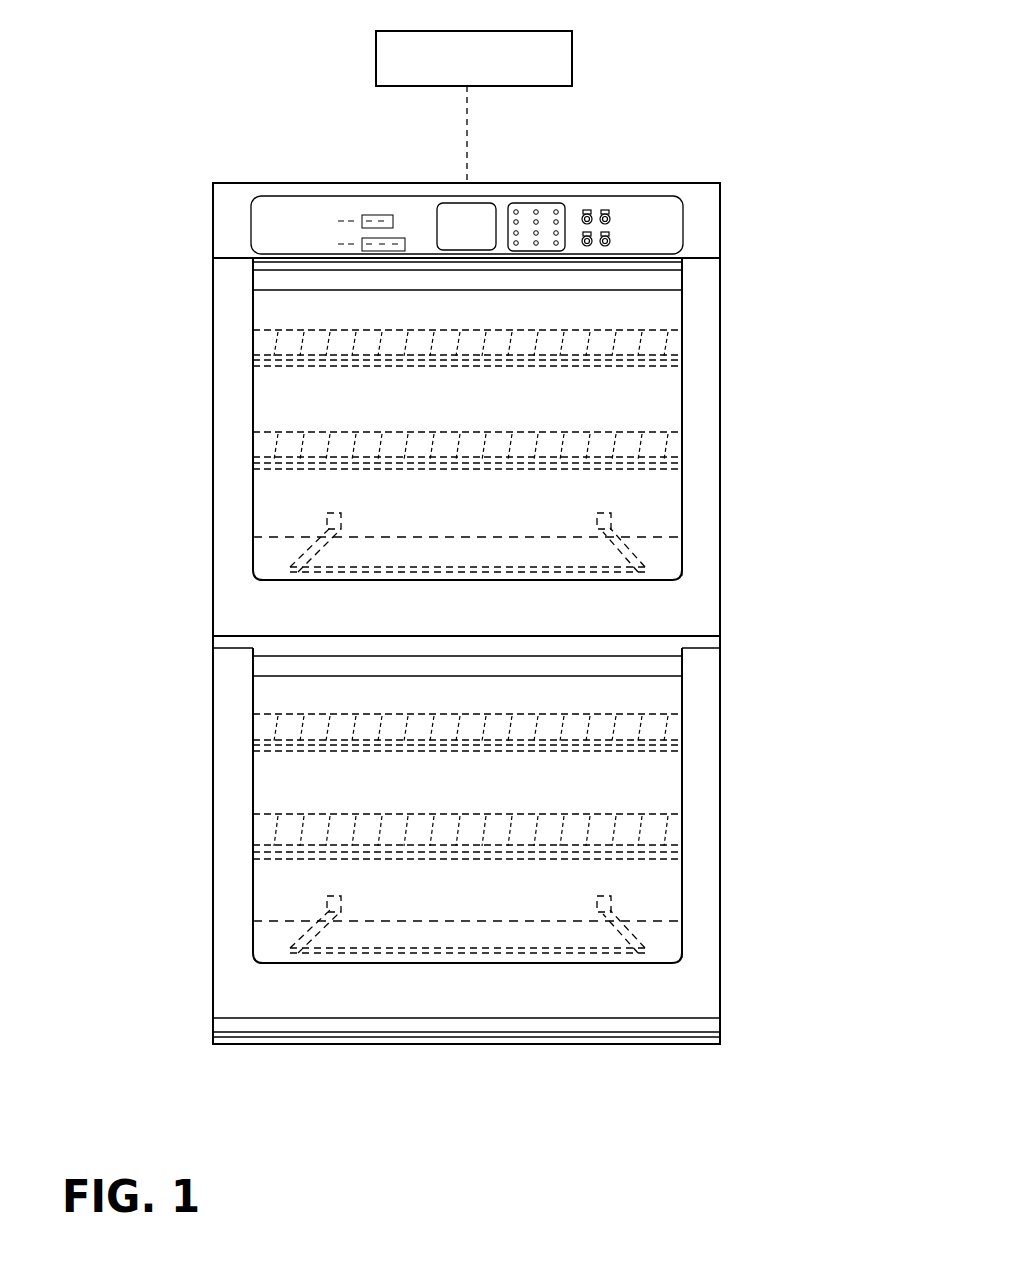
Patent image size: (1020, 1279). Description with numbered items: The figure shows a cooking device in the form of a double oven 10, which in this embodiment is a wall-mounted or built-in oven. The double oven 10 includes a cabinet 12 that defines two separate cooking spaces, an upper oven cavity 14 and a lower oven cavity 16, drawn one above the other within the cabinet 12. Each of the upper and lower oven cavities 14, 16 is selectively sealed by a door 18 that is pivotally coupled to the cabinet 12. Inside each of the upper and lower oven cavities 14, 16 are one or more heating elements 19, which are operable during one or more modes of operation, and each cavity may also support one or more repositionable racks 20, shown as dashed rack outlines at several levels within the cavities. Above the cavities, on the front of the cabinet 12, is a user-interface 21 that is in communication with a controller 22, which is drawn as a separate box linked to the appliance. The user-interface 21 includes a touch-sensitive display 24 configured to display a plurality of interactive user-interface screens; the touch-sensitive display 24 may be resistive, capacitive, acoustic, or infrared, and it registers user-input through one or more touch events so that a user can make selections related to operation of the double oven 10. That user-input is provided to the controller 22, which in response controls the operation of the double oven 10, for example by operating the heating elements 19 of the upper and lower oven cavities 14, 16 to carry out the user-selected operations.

The double oven 10 is at (797, 148).
The cabinet 12 is at (720, 235).
The upper oven cavity 14 is at (532, 400).
The lower oven cavity 16 is at (560, 782).
The door 18 is at (697, 340).
The heating element 19 is at (640, 555).
The repositionable rack 20 is at (320, 358).
The user-interface 21 is at (577, 207).
The controller 22 is at (566, 60).
The touch-sensitive display 24 is at (447, 213).